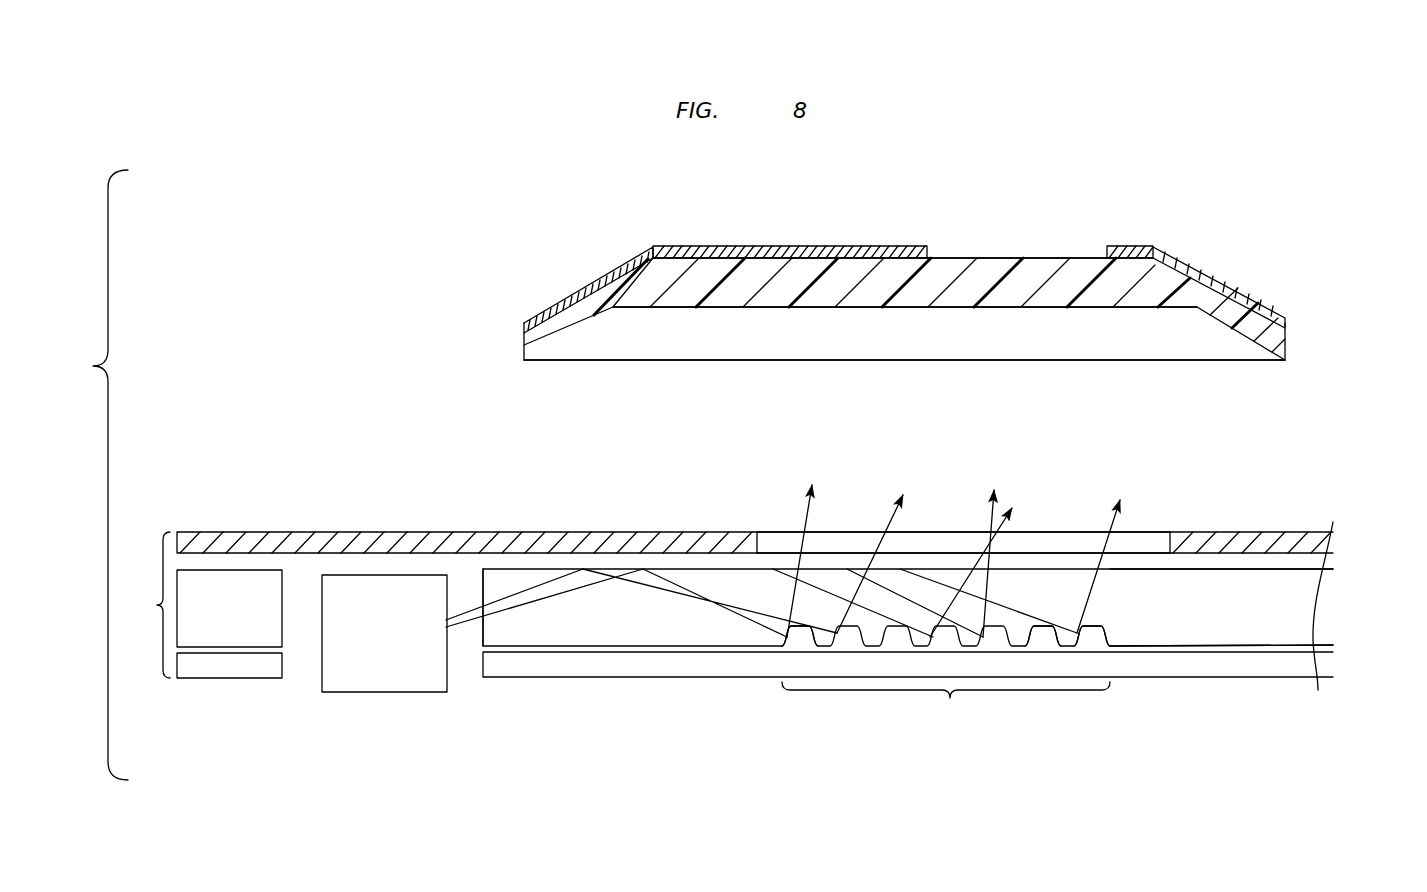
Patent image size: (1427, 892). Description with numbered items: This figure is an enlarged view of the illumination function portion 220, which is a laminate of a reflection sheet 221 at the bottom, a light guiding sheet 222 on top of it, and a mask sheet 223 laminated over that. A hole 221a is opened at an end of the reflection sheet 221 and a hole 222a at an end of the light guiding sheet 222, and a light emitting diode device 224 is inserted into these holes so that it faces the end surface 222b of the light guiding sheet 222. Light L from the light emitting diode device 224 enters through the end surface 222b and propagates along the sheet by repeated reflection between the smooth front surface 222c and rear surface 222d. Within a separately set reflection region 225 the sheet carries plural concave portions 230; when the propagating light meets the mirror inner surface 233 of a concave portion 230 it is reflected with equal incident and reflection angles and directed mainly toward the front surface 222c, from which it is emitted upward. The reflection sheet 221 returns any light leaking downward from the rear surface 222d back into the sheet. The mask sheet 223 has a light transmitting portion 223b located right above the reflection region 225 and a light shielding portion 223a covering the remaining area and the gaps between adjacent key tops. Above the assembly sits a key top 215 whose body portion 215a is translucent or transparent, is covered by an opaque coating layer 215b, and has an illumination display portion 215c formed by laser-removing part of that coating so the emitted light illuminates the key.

The key top 215 is at (737, 291).
The body portion 215a is at (1062, 290).
The coating layer 215b is at (802, 243).
The illumination display portion 215c is at (1003, 250).
The illumination function portion 220 is at (144, 605).
The reflection sheet 221 is at (1303, 661).
The hole 221a is at (288, 668).
The light guiding sheet 222 is at (1303, 607).
The hole 222a is at (283, 588).
The end surface 222b is at (480, 630).
The front surface 222c is at (1132, 567).
The rear surface 222d is at (1140, 645).
The mask sheet 223 is at (1330, 542).
The light shielding portion 223a is at (677, 540).
The light transmitting portion 223b is at (777, 540).
The light emitting diode device 224 is at (368, 678).
The reflection region 225 is at (946, 705).
The concave portion 230 is at (798, 637).
The inner surface 233 is at (1095, 637).
The light L is at (542, 595).